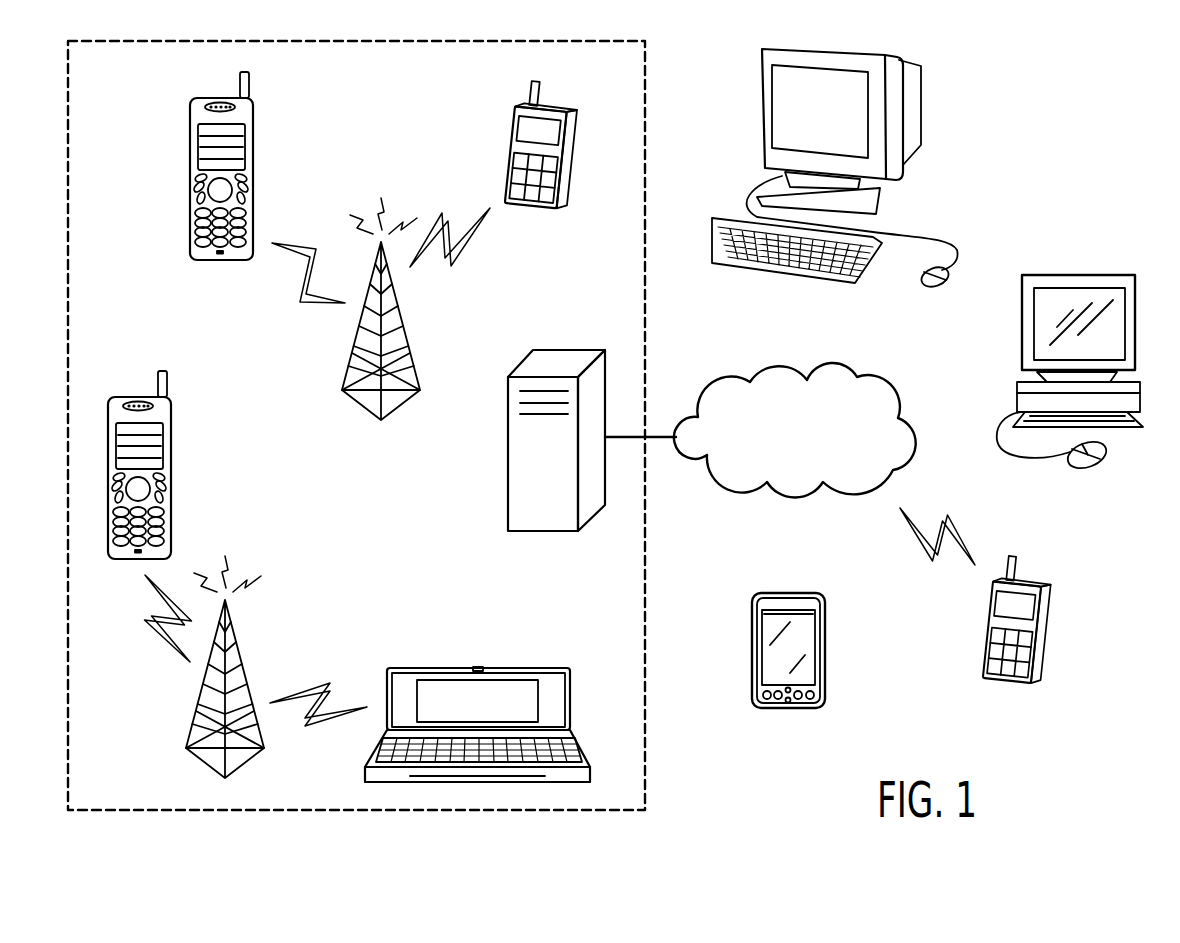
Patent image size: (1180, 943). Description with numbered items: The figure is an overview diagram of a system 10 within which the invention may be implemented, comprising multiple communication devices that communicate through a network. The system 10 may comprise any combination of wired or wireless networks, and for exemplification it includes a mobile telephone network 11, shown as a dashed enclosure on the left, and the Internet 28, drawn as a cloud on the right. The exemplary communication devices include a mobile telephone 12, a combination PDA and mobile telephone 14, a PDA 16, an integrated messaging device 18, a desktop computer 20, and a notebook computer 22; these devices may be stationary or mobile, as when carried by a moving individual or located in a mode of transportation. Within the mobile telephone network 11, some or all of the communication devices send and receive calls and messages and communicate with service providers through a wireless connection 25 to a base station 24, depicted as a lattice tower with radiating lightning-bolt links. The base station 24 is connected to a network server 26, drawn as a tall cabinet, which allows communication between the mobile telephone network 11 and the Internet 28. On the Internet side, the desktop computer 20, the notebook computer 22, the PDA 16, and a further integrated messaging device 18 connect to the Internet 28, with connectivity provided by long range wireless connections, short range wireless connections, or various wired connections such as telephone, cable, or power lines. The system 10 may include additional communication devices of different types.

The system 10 is at (1125, 543).
The mobile telephone network 11 is at (113, 82).
The mobile telephone 12 is at (255, 178).
The combination PDA and mobile telephone 14 is at (478, 668).
The PDA 16 is at (825, 648).
The integrated messaging device 18 is at (511, 156).
The desktop computer 20 is at (921, 100).
The notebook computer 22 is at (1077, 273).
The base station 24 is at (400, 317).
The wireless connection 25 is at (164, 643).
The network server 26 is at (507, 453).
The Internet 28 is at (840, 365).